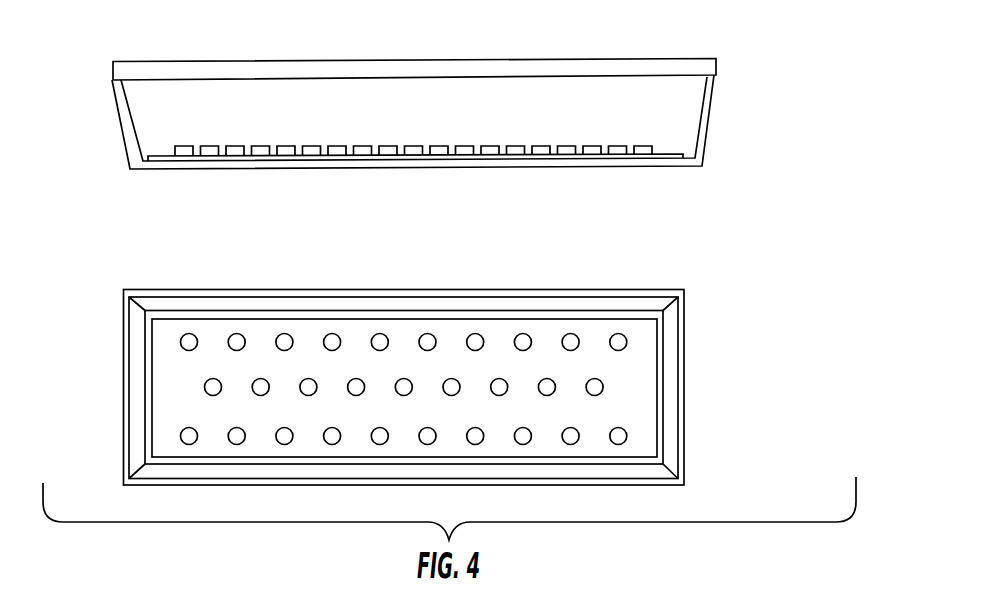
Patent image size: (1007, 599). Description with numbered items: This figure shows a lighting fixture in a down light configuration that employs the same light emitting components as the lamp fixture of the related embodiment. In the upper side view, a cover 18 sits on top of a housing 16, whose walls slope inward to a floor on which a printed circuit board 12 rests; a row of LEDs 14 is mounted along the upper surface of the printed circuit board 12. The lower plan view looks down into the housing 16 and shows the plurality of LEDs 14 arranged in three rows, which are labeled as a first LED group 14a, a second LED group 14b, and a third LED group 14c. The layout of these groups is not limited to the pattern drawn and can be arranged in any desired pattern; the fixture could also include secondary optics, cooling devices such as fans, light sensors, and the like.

The printed circuit board 12 is at (520, 157).
The LEDs 14 is at (417, 146).
The first LED group 14a is at (577, 336).
The second LED group 14b is at (554, 382).
The third LED group 14c is at (458, 393).
The housing 16 is at (796, 160).
The cover 18 is at (662, 59).